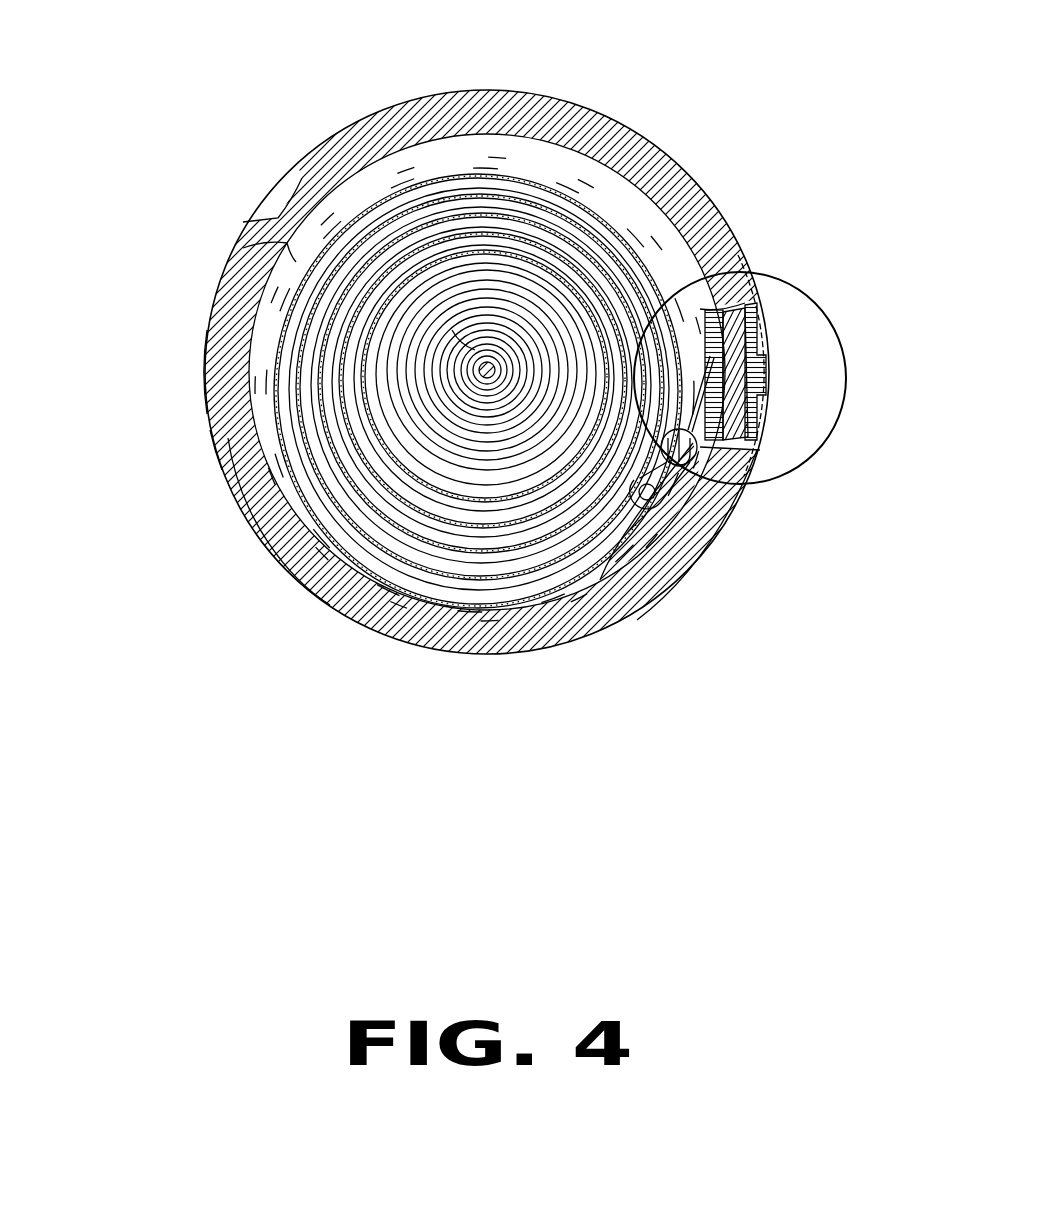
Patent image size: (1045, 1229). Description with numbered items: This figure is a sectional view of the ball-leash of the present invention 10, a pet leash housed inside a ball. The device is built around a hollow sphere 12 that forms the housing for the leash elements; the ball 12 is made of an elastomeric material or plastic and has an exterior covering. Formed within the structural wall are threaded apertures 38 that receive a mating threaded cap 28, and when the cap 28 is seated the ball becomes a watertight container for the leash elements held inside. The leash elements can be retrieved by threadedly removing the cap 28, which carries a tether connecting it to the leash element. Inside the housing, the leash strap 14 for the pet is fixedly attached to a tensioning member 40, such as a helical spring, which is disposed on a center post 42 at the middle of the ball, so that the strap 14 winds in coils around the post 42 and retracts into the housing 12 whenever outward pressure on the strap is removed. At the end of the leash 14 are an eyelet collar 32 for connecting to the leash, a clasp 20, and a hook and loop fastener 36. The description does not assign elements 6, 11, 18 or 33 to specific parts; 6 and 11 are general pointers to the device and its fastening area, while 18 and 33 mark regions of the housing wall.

The reel apparatus 6 is at (187, 294).
The present invention 10 is at (190, 106).
The latch assembly 11 is at (806, 246).
The hollow sphere 12 is at (612, 125).
The leash strap 14 is at (485, 557).
The opening 18 is at (243, 248).
The clasp 20 is at (690, 462).
The threaded cap 28 is at (228, 438).
The eyelet collar 32 is at (653, 500).
The flange 33 is at (323, 603).
The hook and loop fastener 36 is at (750, 275).
The threaded apertures 38 is at (168, 427).
The tensioning member 40 is at (458, 333).
The center post 42 is at (490, 362).